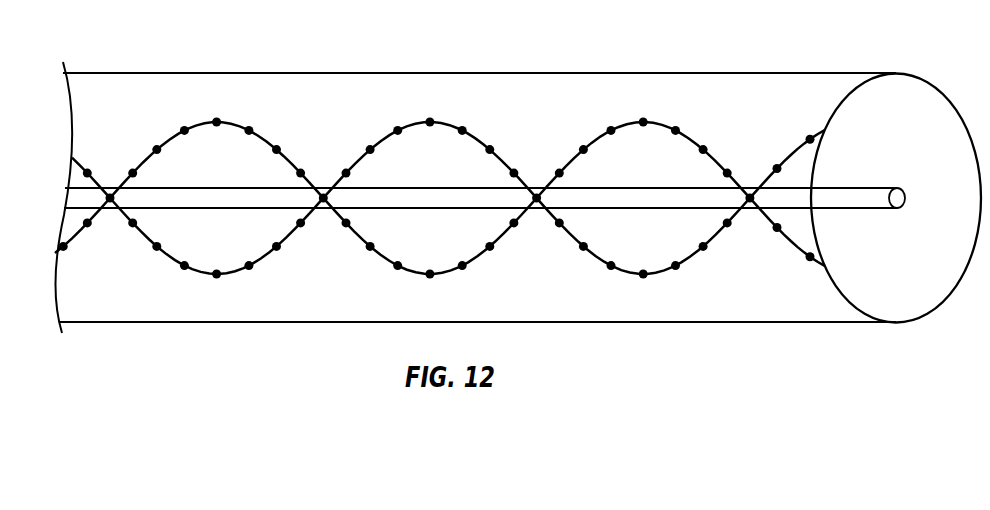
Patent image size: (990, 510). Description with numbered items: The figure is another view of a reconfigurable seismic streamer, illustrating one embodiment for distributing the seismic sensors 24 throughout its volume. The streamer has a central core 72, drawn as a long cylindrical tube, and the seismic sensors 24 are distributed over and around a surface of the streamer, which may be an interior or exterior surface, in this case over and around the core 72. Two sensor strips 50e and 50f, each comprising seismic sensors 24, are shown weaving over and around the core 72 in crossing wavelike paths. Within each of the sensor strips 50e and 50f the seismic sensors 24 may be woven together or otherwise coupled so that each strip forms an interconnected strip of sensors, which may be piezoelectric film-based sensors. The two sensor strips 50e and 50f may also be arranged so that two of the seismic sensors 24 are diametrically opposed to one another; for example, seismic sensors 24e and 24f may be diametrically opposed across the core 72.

The seismic sensors 24 is at (440, 203).
The seismic sensor 24e is at (440, 190).
The seismic sensor 24f is at (448, 203).
The sensor strip 50e is at (793, 143).
The sensor strip 50f is at (793, 258).
The core 72 is at (840, 188).